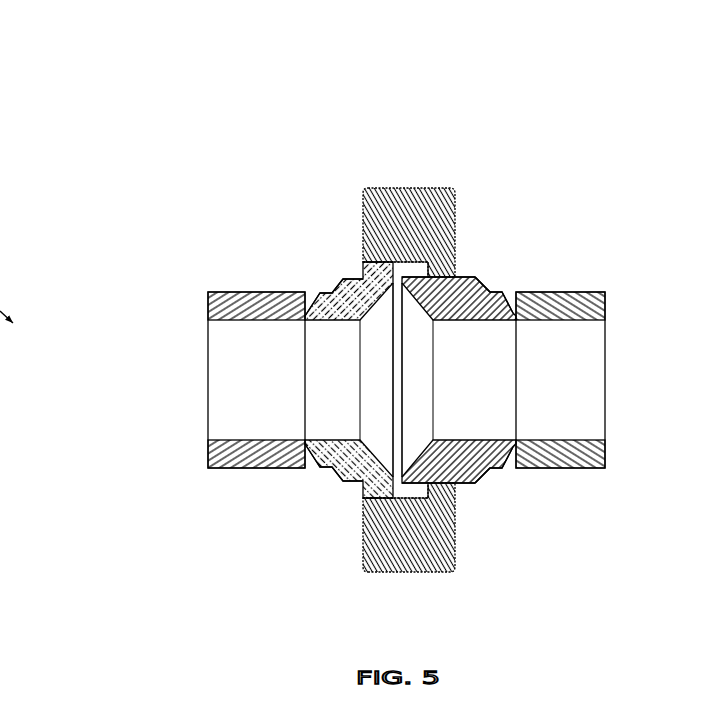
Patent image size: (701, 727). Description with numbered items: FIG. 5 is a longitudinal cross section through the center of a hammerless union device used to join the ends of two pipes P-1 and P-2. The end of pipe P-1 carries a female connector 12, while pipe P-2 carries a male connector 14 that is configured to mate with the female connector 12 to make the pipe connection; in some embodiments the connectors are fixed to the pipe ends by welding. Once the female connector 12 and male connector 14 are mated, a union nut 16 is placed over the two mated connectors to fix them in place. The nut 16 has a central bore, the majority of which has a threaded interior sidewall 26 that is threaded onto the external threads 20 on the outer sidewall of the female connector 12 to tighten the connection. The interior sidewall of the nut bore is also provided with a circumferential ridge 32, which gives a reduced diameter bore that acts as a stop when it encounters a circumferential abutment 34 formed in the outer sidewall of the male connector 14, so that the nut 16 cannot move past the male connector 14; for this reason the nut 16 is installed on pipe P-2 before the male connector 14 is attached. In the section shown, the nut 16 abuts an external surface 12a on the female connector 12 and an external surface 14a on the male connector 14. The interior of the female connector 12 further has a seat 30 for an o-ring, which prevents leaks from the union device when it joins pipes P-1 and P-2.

The female connector 12 is at (339, 286).
The external surface 12a is at (393, 265).
The male connector 14 is at (482, 288).
The external surface 14a is at (437, 277).
The union nut 16 is at (406, 186).
The external threads 20 is at (367, 497).
The threaded interior sidewall 26 is at (399, 262).
The seat 30 is at (483, 481).
The circumferential ridge 32 is at (448, 277).
The circumferential abutment 34 is at (423, 274).
The pipe P-1 is at (244, 464).
The pipe P-2 is at (599, 291).